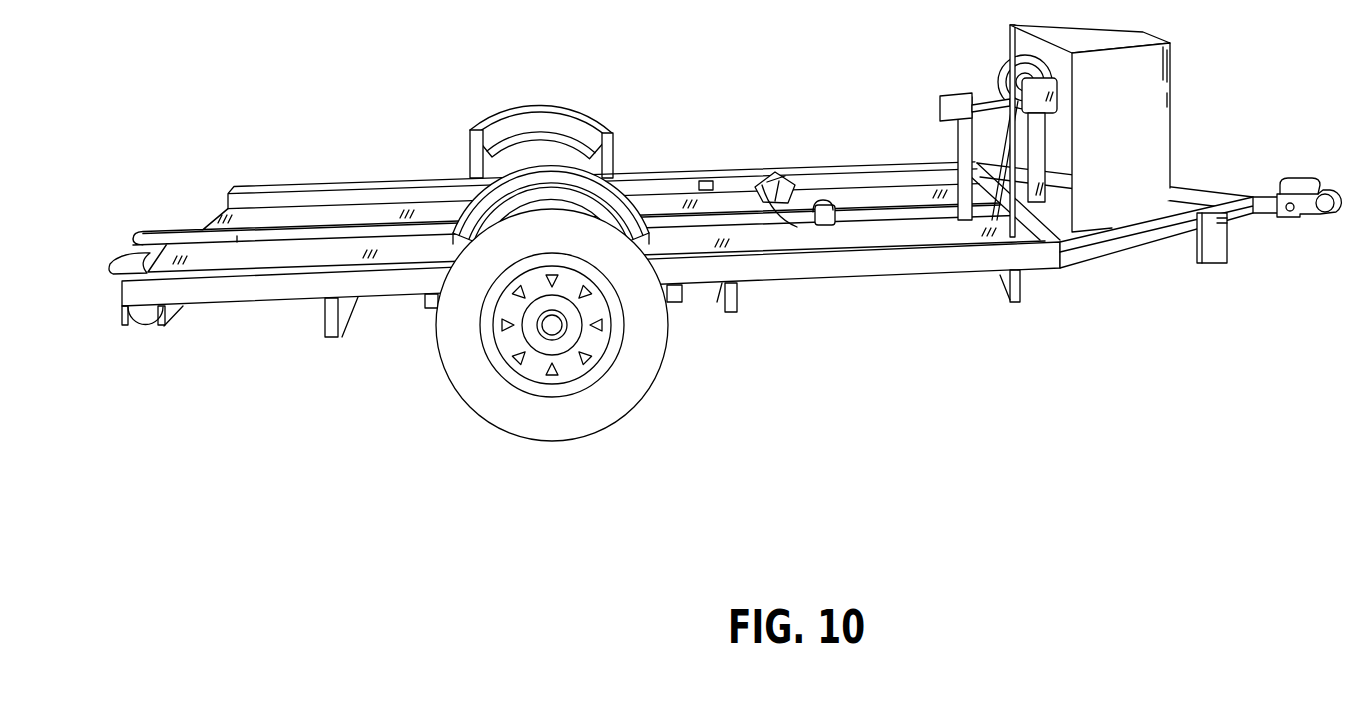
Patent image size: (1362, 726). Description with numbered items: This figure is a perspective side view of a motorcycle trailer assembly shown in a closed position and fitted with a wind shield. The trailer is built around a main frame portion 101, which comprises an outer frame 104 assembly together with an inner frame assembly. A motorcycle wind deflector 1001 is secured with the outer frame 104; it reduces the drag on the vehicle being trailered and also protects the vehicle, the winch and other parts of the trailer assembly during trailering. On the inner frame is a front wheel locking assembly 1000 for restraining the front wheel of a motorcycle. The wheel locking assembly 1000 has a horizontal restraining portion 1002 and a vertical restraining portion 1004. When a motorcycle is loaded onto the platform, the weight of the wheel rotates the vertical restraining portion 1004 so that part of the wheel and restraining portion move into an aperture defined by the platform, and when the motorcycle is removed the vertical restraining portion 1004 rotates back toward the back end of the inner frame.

The main frame portion 101 is at (584, 273).
The outer frame 104 is at (1112, 230).
The front wheel locking assembly 1000 is at (909, 237).
The motorcycle wind deflector 1001 is at (1182, 114).
The horizontal restraining portion 1002 is at (962, 97).
The vertical restraining portion 1004 is at (762, 185).